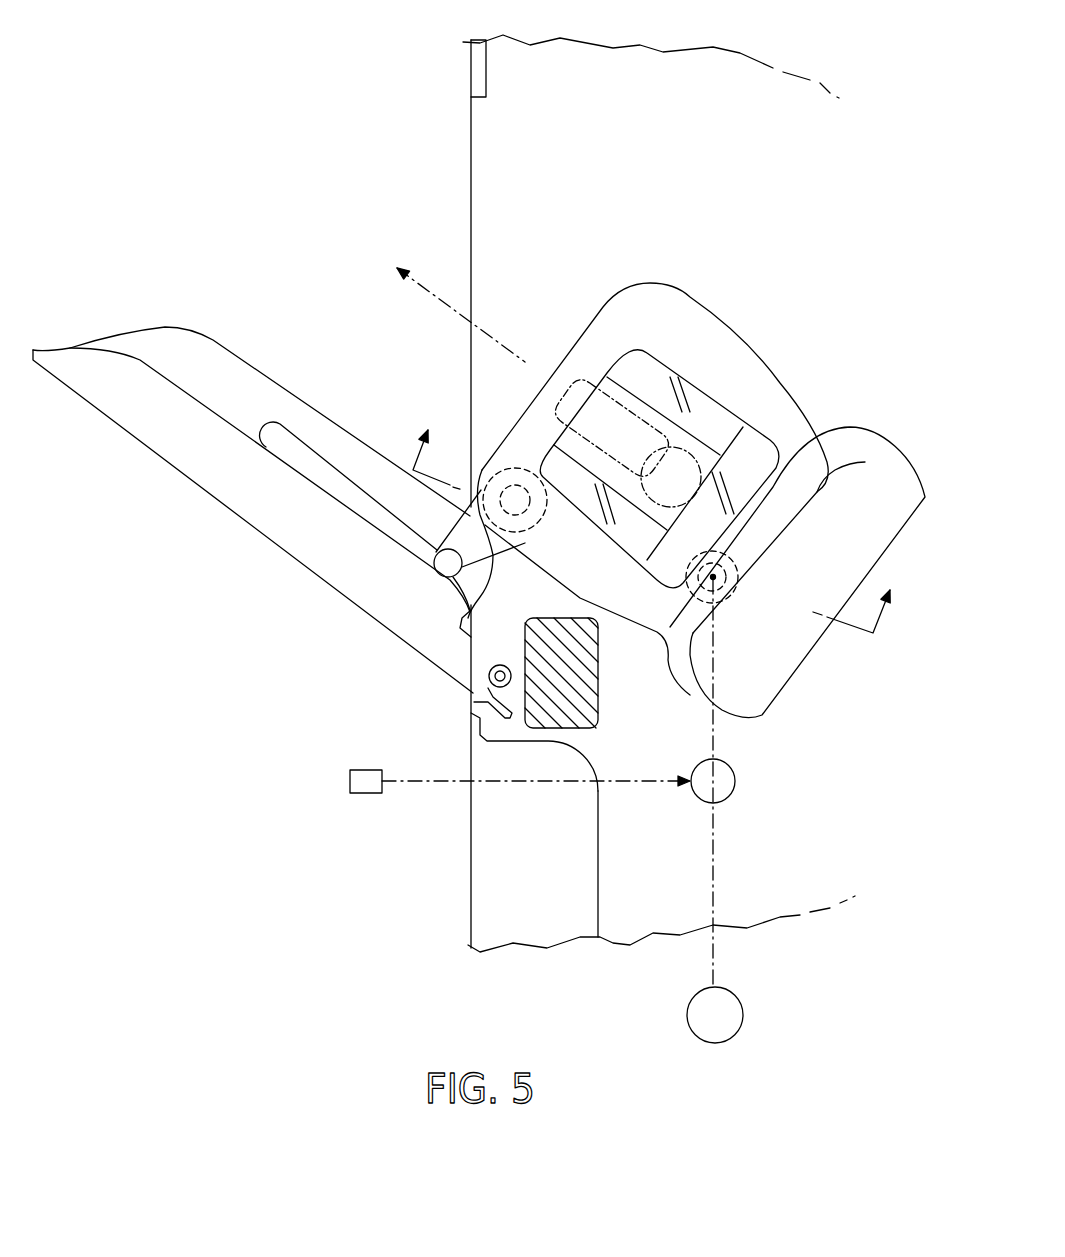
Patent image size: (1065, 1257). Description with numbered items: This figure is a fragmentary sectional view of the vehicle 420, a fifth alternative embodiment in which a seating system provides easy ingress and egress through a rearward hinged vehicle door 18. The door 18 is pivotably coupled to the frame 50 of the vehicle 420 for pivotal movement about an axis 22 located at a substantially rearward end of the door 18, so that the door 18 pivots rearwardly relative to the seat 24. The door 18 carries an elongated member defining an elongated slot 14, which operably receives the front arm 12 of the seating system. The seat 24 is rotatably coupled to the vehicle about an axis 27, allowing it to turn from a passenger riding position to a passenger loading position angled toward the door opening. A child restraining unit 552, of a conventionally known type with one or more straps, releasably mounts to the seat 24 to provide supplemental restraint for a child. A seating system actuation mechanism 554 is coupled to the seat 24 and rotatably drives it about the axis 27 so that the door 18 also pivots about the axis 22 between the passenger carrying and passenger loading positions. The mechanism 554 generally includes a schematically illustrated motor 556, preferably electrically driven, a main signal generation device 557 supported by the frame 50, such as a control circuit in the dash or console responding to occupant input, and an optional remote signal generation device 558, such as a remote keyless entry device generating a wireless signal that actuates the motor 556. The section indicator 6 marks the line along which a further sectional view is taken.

The vehicle 420 is at (293, 103).
The frame 50 is at (472, 67).
The vehicle door 18 is at (223, 482).
The elongated slot 14 is at (357, 488).
The front arm 12 is at (493, 540).
The seat 24 is at (708, 335).
The child restraining unit 552 is at (722, 422).
The axis 27 is at (718, 575).
The axis 22 is at (497, 688).
The seating system actuation mechanism 554 is at (370, 767).
The remote signal generation device 558 is at (348, 783).
The motor 556 is at (728, 797).
The main signal generation device 557 is at (735, 1035).
The section line 6 is at (657, 525).